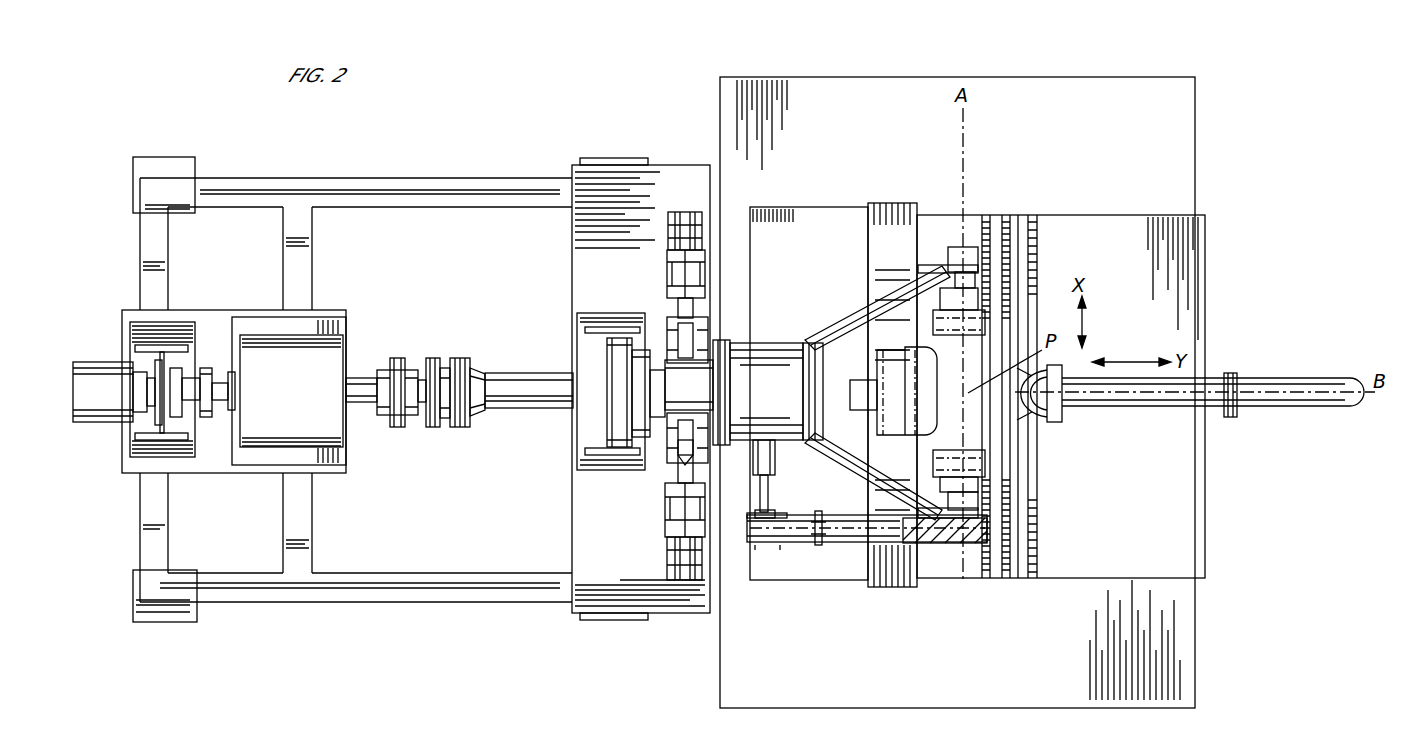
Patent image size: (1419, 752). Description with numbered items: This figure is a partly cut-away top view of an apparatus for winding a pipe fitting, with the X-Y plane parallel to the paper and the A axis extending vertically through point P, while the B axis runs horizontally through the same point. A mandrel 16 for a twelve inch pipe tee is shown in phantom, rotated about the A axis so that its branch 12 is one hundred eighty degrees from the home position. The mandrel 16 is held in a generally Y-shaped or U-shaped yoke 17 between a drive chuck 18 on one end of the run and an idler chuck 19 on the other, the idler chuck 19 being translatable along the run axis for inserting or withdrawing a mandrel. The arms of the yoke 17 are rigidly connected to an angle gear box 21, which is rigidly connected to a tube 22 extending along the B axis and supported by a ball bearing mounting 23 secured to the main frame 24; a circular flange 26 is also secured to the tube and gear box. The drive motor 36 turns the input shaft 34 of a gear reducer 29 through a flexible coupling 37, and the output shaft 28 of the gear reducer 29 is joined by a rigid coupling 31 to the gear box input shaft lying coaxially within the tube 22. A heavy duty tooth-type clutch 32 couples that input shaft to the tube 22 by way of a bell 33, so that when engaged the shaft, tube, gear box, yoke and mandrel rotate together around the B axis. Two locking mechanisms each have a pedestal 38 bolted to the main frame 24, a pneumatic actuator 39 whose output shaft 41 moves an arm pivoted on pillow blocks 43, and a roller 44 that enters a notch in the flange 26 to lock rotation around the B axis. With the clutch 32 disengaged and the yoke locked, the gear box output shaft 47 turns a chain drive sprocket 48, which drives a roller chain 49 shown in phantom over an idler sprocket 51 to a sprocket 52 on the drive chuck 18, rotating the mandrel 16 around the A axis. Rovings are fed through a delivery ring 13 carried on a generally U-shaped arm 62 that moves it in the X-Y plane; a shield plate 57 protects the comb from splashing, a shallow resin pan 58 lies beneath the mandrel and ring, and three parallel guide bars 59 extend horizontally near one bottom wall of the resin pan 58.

The branch 12 is at (880, 345).
The delivery ring 13 is at (1040, 422).
The mandrel 16 is at (1000, 318).
The yoke 17 is at (845, 322).
The drive chuck 18 is at (985, 500).
The idler chuck 19 is at (978, 280).
The angle gear box 21 is at (778, 343).
The tube 22 is at (555, 410).
The ball bearing mounting 23 is at (655, 345).
The main frame 24 is at (1197, 643).
The circular flange 26 is at (693, 385).
The output shaft 28 is at (364, 378).
The gear reducer 29 is at (346, 345).
The rigid coupling 31 is at (400, 365).
The tooth-type clutch 32 is at (440, 365).
The bell 33 is at (478, 372).
The input shaft 34 is at (230, 375).
The drive motor 36 is at (103, 360).
The flexible coupling 37 is at (205, 365).
The pedestal 38 is at (672, 219).
The pneumatic actuator 39 is at (665, 262).
The output shaft 41 is at (693, 308).
The pillow blocks 43 is at (667, 330).
The roller 44 is at (675, 470).
The output shaft 47 is at (770, 500).
The chain drive sprocket 48 is at (778, 548).
The roller chain 49 is at (800, 548).
The idler sprocket 51 is at (822, 545).
The sprocket 52 is at (960, 545).
The shield plate 57 is at (895, 548).
The resin pan 58 is at (1195, 487).
The guide bars 59 is at (990, 565).
The arm 62 is at (1258, 378).